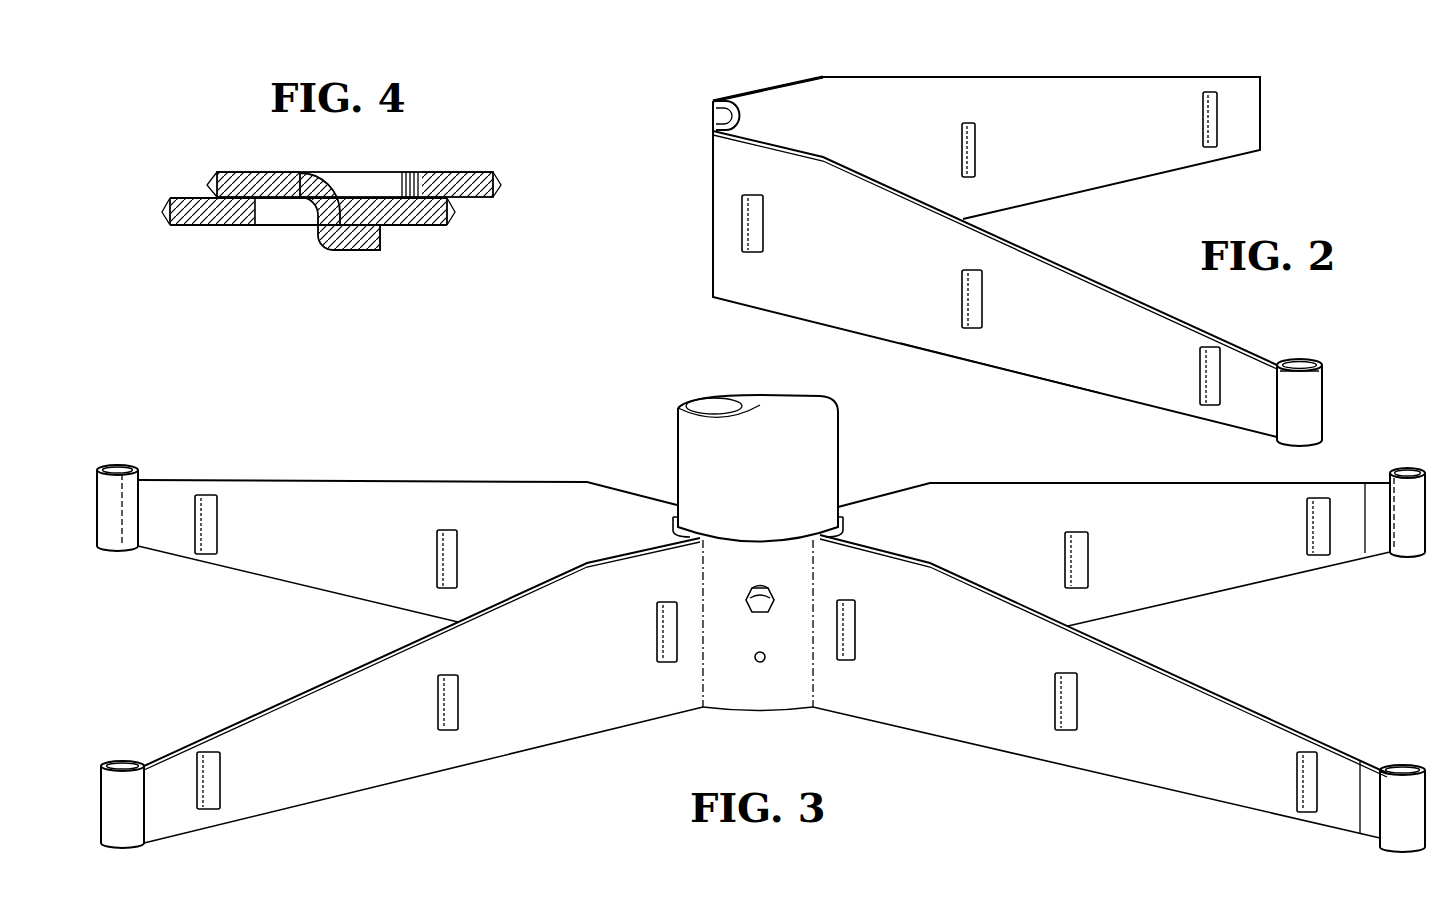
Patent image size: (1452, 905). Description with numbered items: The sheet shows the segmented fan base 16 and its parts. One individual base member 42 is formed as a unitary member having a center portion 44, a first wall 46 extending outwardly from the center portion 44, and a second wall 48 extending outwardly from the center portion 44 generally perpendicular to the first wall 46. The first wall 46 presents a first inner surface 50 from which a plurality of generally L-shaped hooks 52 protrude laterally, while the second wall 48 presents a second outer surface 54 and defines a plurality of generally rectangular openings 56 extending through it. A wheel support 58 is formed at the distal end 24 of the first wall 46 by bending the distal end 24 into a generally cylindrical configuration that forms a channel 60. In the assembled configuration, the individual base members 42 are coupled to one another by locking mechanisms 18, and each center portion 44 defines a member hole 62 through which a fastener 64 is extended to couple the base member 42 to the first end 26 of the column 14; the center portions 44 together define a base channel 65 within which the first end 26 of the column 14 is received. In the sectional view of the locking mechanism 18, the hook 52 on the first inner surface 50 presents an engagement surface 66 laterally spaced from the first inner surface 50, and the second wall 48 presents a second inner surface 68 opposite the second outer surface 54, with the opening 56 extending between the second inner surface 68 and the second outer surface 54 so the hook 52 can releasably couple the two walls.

In FIG. 3, the column 14 is at (678, 432).
In FIG. 3, the base 16 is at (375, 478).
In FIG. 3, the locking mechanism 18 is at (1065, 727).
In FIG. 2, the distal end 24 is at (1282, 363).
In FIG. 3, the first end 26 is at (674, 500).
In FIG. 2, the individual base member 42 is at (975, 77).
In FIG. 3, the individual base member 42 is at (540, 745).
In FIG. 2, the center portion 44 is at (713, 100).
In FIG. 3, the center portion 44 is at (768, 685).
In FIG. 2, the first wall 46 is at (1107, 283).
In FIG. 4, the first wall 46 is at (263, 170).
In FIG. 2, the second wall 48 is at (1145, 77).
In FIG. 4, the second wall 48 is at (195, 228).
In FIG. 2, the first inner surface 50 is at (1103, 372).
In FIG. 4, the first inner surface 50 is at (272, 222).
In FIG. 2, the hook 52 is at (962, 328).
In FIG. 2, the second outer surface 54 is at (1100, 155).
In FIG. 4, the second outer surface 54 is at (182, 226).
In FIG. 2, the opening 56 is at (1218, 145).
In FIG. 4, the opening 56 is at (286, 215).
In FIG. 2, the wheel support 58 is at (1322, 367).
In FIG. 2, the channel 60 is at (1300, 366).
In FIG. 3, the member hole 62 is at (757, 662).
In FIG. 3, the fastener 64 is at (757, 588).
In FIG. 3, the base channel 65 is at (752, 540).
In FIG. 4, the engagement surface 66 is at (392, 250).
In FIG. 4, the second inner surface 68 is at (190, 195).